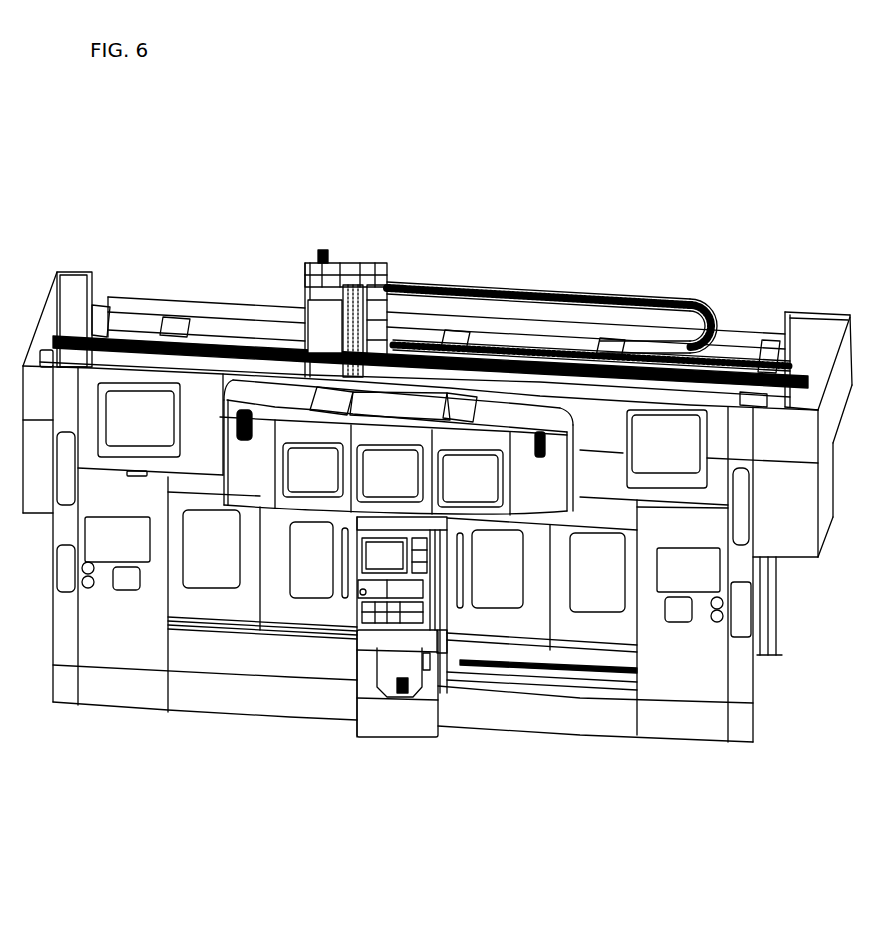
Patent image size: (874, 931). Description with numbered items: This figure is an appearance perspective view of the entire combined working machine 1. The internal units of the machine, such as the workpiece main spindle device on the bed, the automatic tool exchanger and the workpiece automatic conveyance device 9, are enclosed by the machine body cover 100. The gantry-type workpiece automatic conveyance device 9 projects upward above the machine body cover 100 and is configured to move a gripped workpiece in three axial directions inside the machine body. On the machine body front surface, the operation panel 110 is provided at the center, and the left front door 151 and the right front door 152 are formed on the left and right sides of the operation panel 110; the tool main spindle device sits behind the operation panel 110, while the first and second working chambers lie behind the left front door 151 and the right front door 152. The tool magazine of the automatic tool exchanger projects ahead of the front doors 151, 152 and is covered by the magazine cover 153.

The combined working machine 1 is at (541, 213).
The workpiece automatic conveyance device 9 is at (305, 248).
The machine body cover 100 is at (697, 712).
The operation panel 110 is at (370, 600).
The left front door 151 is at (312, 585).
The right front door 152 is at (487, 593).
The magazine cover 153 is at (255, 475).